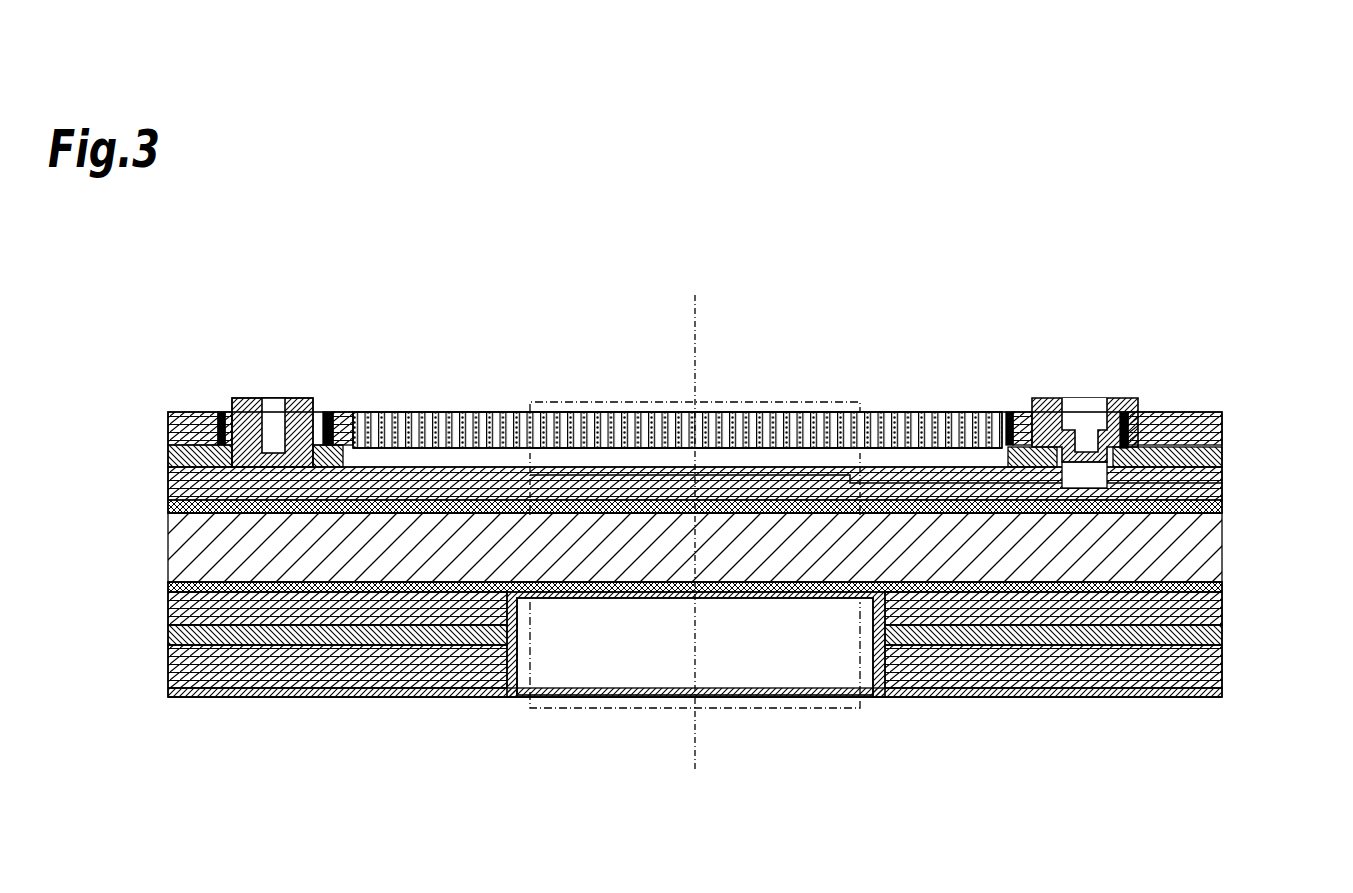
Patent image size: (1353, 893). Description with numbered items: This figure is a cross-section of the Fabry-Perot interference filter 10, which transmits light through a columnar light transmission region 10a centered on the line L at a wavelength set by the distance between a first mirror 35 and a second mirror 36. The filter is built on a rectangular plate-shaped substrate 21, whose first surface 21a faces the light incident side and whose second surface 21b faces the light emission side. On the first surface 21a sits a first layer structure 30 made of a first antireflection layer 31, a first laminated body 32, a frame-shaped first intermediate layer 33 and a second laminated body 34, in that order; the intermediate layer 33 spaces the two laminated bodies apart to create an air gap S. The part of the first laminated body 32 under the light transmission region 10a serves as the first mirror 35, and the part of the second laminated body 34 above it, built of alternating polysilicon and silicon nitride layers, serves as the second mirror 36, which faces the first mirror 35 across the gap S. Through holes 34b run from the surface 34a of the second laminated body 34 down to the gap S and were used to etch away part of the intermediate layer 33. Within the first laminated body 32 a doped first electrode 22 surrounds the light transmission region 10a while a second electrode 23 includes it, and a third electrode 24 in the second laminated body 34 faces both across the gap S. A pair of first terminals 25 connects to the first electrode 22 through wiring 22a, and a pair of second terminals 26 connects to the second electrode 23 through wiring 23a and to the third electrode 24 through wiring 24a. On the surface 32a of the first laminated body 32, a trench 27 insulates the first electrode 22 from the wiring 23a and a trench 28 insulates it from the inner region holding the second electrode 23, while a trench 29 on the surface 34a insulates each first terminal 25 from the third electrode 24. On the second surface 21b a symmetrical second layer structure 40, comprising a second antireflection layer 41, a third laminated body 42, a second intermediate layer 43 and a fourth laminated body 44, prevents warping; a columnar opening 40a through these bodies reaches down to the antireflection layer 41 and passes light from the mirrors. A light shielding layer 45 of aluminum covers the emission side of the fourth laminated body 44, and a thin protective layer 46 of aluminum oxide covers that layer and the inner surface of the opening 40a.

The Fabry-Perot interference filter 10 is at (908, 311).
The light transmission region 10a is at (760, 708).
The line L is at (697, 303).
The substrate 21 is at (168, 552).
The first surface 21a is at (413, 508).
The second surface 21b is at (418, 585).
The first electrode 22 is at (940, 467).
The wiring 22a is at (335, 455).
The second electrode 23 is at (720, 467).
The wiring 23a is at (1058, 485).
The third electrode 24 is at (482, 412).
The wiring 24a is at (1012, 412).
The first terminal 25 is at (272, 398).
The second terminal 26 is at (1080, 398).
The trench 27 is at (1124, 412).
The trench 28 is at (856, 475).
The trench 29 is at (220, 412).
The first layer structure 30 is at (163, 413).
The first antireflection layer 31 is at (1222, 507).
The first laminated body 32 is at (1232, 467).
The surface 32a is at (798, 462).
The first intermediate layer 33 is at (1222, 456).
The second laminated body 34 is at (1232, 413).
The surface 34a is at (330, 412).
The through hole 34b is at (566, 412).
The first mirror 35 is at (675, 513).
The second mirror 36 is at (667, 404).
The gap S is at (663, 460).
The second layer structure 40 is at (163, 582).
The opening 40a is at (880, 650).
The second antireflection layer 41 is at (1222, 585).
The third laminated body 42 is at (1232, 592).
The second intermediate layer 43 is at (1222, 635).
The fourth laminated body 44 is at (1232, 645).
The light shielding layer 45 is at (1203, 697).
The protective layer 46 is at (1147, 697).